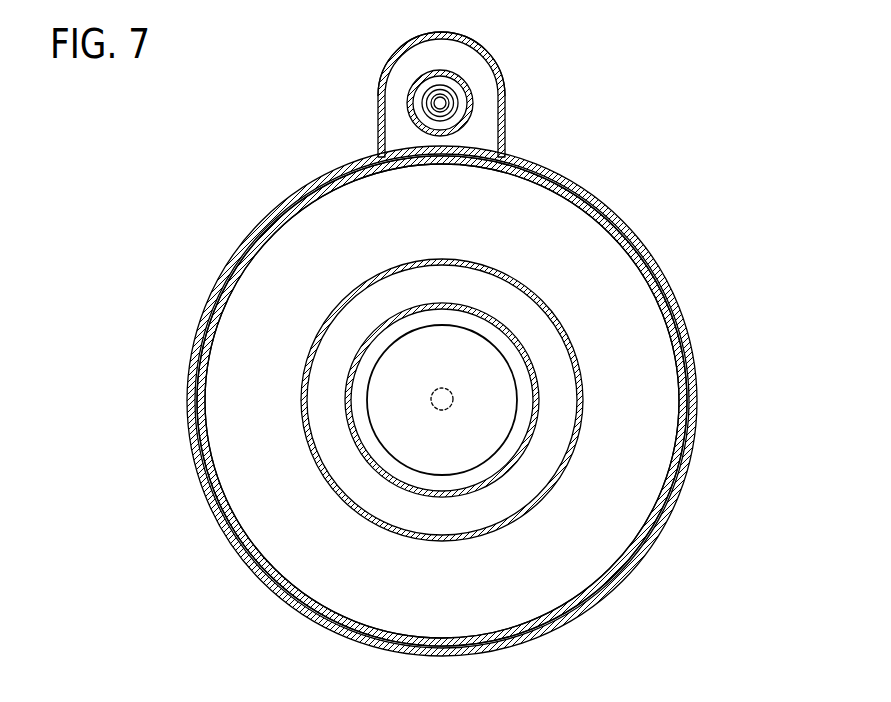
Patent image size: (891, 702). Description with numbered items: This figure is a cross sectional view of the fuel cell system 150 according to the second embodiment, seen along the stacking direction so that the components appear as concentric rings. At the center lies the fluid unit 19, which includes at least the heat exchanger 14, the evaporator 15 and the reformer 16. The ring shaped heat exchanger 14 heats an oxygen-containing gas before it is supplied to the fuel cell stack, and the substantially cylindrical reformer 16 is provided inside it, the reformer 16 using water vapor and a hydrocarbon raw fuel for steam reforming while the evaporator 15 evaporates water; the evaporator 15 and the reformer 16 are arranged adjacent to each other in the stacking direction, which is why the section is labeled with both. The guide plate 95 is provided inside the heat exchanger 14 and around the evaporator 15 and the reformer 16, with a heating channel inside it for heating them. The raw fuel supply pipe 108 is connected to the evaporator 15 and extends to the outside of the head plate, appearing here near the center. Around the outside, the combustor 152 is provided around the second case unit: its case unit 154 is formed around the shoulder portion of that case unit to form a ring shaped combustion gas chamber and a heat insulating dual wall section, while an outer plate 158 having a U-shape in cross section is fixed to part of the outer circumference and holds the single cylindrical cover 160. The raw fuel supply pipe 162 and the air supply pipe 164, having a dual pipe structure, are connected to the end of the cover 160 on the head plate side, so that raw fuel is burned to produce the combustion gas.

The fuel cell system 150 is at (143, 120).
The combustor 152 is at (555, 92).
The case unit 154 is at (453, 401).
The outer plate 158 is at (486, 53).
The cover 160 is at (473, 102).
The raw fuel supply pipe 162 is at (428, 116).
The air supply pipe 164 is at (424, 93).
The heat exchanger 14 is at (688, 391).
The evaporator 15 is at (825, 377).
The reformer 16 is at (487, 417).
The fluid unit 19 is at (501, 401).
The guide plate 95 is at (529, 349).
The raw fuel supply pipe 108 is at (442, 411).